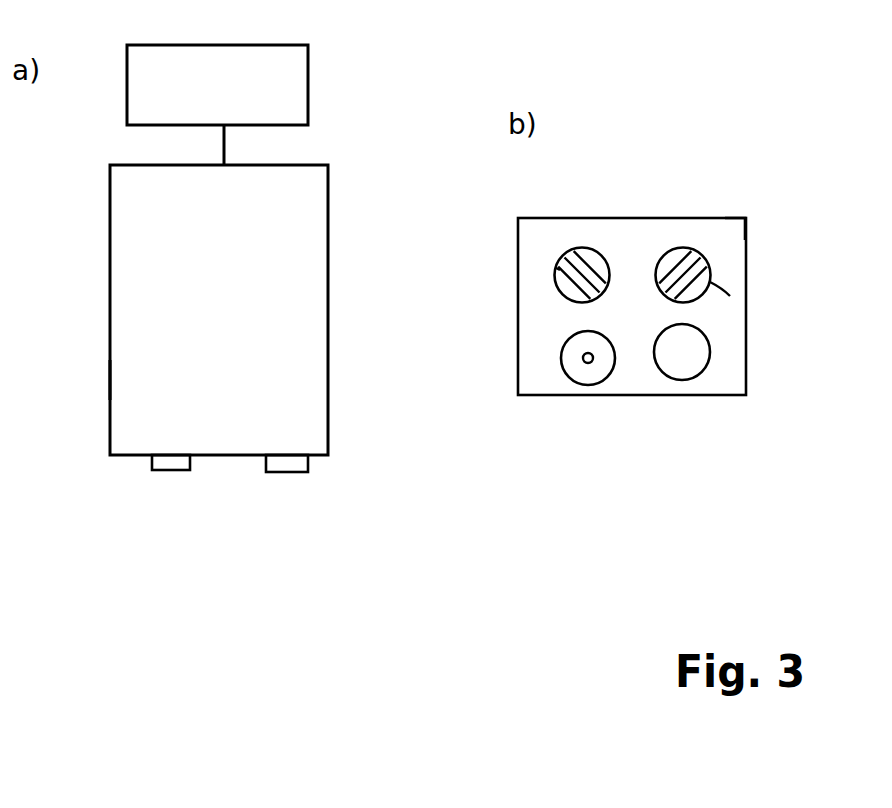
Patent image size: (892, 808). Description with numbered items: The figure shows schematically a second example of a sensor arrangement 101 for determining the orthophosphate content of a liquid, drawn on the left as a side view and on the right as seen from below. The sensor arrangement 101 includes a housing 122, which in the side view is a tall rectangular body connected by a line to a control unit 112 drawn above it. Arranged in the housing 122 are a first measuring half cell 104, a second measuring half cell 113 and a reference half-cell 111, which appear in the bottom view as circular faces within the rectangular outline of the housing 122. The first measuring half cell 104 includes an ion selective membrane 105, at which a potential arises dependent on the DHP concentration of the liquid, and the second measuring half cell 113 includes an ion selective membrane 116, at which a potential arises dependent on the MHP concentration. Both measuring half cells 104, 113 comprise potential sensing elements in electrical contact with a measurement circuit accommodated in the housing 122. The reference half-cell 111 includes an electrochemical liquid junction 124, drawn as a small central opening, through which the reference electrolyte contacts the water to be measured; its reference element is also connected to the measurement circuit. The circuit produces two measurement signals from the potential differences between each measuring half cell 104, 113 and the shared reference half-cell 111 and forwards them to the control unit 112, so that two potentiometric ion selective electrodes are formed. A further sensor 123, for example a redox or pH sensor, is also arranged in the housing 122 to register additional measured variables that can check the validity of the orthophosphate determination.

The sensor arrangement 101 is at (90, 189).
The control unit 112 is at (217, 105).
The housing 122 is at (112, 380).
The second measuring half cell 113 is at (173, 466).
The first measuring half cell 104 is at (288, 463).
The ion selective membrane 105 is at (712, 281).
The ion selective membrane 116 is at (558, 270).
The electrochemical liquid junction 124 is at (586, 356).
The reference half-cell 111 is at (590, 374).
The further sensor 123 is at (697, 352).